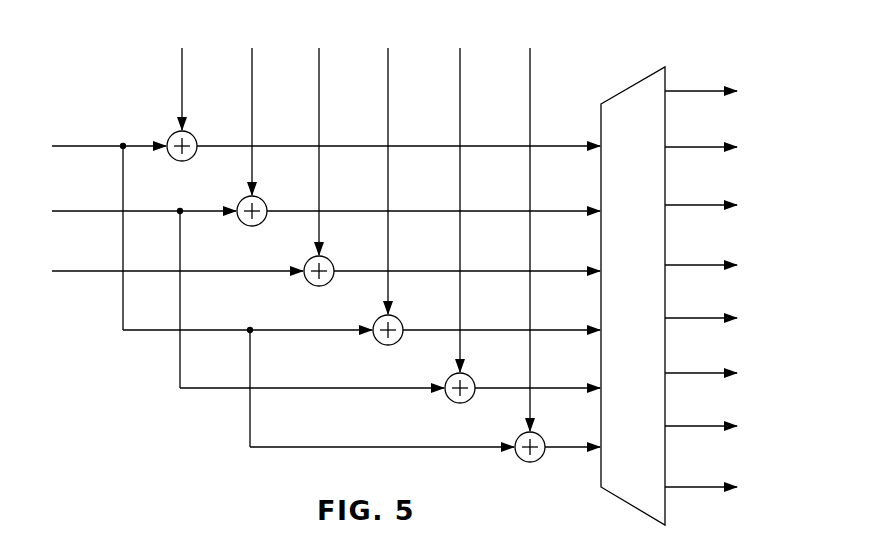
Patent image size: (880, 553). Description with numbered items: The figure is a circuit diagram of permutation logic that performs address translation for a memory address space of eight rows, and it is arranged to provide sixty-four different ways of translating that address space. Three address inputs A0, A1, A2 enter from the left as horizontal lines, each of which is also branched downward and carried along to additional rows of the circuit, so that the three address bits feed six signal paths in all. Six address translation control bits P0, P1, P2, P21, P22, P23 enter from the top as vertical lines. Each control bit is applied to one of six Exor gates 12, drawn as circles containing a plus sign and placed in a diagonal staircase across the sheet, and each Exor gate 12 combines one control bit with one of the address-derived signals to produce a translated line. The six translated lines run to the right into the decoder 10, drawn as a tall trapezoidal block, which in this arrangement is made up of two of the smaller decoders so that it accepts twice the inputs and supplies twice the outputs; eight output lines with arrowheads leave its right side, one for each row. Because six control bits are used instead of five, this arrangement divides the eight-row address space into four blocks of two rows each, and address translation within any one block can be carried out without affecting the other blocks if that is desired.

The decoder 10 is at (626, 89).
The Exor gates 12 is at (240, 200).
The control input P0 is at (179, 77).
The control input P1 is at (251, 109).
The control input P2 is at (314, 139).
The control input P21 is at (387, 169).
The control input P22 is at (460, 198).
The control input P23 is at (532, 227).
The address input A0 is at (326, 226).
The address input A1 is at (326, 286).
The address input A2 is at (326, 346).